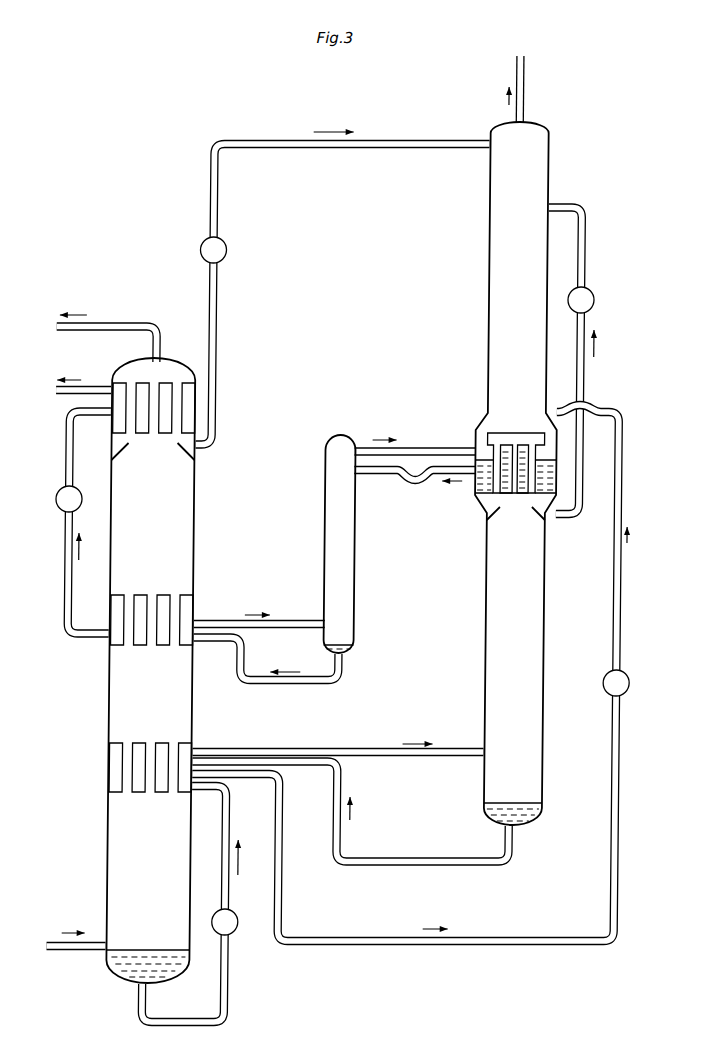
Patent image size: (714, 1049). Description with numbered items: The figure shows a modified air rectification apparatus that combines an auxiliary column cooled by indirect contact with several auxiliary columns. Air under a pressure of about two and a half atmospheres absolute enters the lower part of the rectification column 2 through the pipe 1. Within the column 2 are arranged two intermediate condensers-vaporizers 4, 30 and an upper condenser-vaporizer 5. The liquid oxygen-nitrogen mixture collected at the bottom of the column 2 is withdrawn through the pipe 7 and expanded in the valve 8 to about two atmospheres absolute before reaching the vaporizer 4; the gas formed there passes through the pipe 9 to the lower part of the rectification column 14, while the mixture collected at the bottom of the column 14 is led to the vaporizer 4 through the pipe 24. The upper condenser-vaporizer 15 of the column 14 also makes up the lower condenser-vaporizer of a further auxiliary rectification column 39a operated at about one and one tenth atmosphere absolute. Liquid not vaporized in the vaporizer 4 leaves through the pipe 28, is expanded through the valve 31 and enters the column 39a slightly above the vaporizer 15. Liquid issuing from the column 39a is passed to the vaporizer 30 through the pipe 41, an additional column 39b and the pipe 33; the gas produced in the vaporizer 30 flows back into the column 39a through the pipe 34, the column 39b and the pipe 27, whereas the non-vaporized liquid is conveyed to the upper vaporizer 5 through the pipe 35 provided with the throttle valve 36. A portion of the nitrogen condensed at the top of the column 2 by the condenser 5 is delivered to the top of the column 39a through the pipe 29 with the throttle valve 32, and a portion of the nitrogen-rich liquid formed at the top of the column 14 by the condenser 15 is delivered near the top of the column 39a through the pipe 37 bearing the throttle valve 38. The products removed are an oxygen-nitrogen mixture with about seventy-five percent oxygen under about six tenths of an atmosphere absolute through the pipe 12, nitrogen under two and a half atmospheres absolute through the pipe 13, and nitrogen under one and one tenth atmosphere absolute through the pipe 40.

The pipe 1 is at (69, 950).
The rectification column 2 is at (155, 670).
The intermediate condenser-vaporizer 4 is at (113, 771).
The upper condenser-vaporizer 5 is at (189, 413).
The pipe 7 is at (235, 1003).
The valve 8 is at (205, 904).
The pipe 9 is at (370, 748).
The pipe 12 is at (92, 387).
The pipe 13 is at (111, 323).
The rectification column 14 is at (521, 473).
The upper condenser-vaporizer 15 is at (546, 477).
The pipe 24 is at (424, 867).
The pipe 27 is at (420, 446).
The pipe 28 is at (347, 935).
The pipe 29 is at (218, 352).
The intermediate condenser-vaporizer 30 is at (188, 612).
The valve 31 is at (610, 695).
The throttle valve 32 is at (224, 251).
The pipe 33 is at (329, 688).
The pipe 34 is at (296, 617).
The pipe 35 is at (60, 580).
The throttle valve 36 is at (56, 497).
The pipe 37 is at (589, 373).
The throttle valve 38 is at (594, 302).
The auxiliary rectification column 39a is at (488, 285).
The additional column 39b is at (358, 597).
The pipe 40 is at (521, 82).
The pipe 41 is at (422, 485).